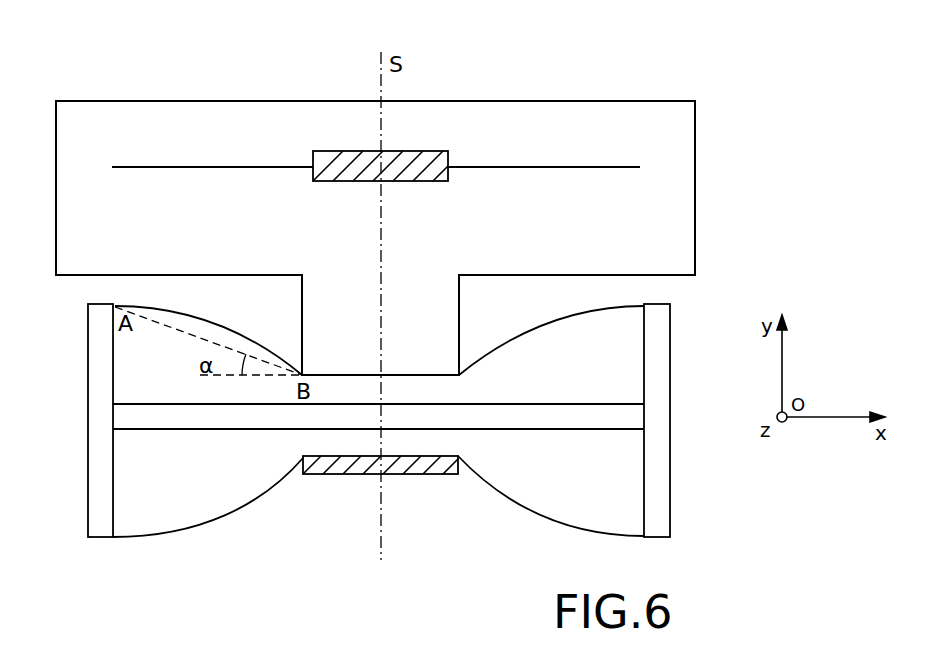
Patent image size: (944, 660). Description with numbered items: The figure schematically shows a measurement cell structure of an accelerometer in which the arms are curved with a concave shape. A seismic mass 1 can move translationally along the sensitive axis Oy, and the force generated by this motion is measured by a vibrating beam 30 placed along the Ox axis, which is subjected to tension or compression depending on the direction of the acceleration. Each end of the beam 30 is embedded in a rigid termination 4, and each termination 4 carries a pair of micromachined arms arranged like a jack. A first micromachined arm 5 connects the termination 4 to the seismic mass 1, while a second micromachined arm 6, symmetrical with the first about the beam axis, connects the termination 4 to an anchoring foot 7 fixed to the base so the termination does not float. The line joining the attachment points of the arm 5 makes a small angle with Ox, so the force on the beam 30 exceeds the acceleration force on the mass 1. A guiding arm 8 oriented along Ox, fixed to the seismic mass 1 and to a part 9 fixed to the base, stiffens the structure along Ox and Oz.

The seismic mass 1 is at (680, 153).
The rigid termination 4 is at (655, 386).
The first micromachined arm 5 is at (524, 331).
The second micromachined arm 6 is at (557, 524).
The anchoring foot 7 is at (416, 466).
The guiding arm 8 is at (597, 166).
The part fixed to the base 9 is at (430, 162).
The vibrating beam 30 is at (243, 430).